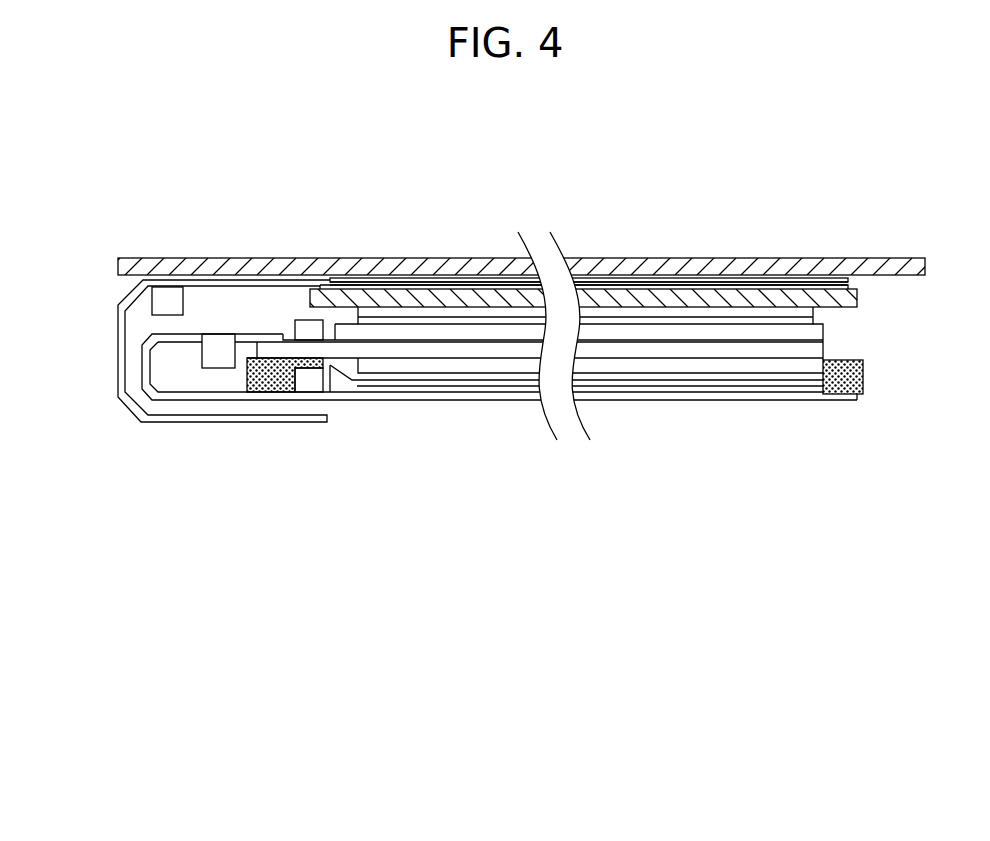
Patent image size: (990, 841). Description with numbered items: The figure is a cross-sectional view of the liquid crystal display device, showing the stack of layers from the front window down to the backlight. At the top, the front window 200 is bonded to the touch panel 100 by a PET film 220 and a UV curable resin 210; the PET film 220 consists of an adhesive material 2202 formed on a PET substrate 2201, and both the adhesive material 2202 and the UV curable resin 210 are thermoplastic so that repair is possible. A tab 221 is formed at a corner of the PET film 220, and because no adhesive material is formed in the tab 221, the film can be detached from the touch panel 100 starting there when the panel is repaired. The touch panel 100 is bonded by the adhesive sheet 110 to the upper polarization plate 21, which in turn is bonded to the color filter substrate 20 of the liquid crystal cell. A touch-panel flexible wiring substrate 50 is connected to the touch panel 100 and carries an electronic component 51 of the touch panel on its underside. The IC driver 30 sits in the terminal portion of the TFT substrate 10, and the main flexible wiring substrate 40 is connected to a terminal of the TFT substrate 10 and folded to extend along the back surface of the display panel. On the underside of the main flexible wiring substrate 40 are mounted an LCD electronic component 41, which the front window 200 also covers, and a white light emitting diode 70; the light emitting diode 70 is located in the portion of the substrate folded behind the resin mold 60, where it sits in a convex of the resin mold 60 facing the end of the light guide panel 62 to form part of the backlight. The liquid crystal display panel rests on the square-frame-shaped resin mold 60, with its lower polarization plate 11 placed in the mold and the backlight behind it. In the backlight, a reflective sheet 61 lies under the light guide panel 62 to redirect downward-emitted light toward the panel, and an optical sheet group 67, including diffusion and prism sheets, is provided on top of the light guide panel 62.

The TFT substrate 10 is at (823, 363).
The lower polarization plate 11 is at (385, 366).
The color filter substrate 20 is at (812, 350).
The upper polarization plate 21 is at (812, 337).
The IC driver 30 is at (307, 330).
The main flexible wiring substrate 40 is at (178, 400).
The LCD electronic component 41 is at (220, 353).
The touch-panel flexible wiring substrate 50 is at (118, 317).
The electronic component 51 is at (153, 308).
The resin mold 60 is at (267, 380).
The reflective sheet 61 is at (735, 400).
The light guide panel 62 is at (513, 392).
The optical sheet group 67 is at (445, 380).
The light emitting diode 70 is at (310, 383).
The touch panel 100 is at (735, 298).
The adhesive sheet 110 is at (805, 313).
The front window 200 is at (861, 258).
The UV curable resin 210 is at (388, 280).
The PET film 220 is at (392, 193).
The tab 221 is at (347, 279).
The PET substrate 2201 is at (427, 281).
The adhesive material 2202 is at (502, 287).